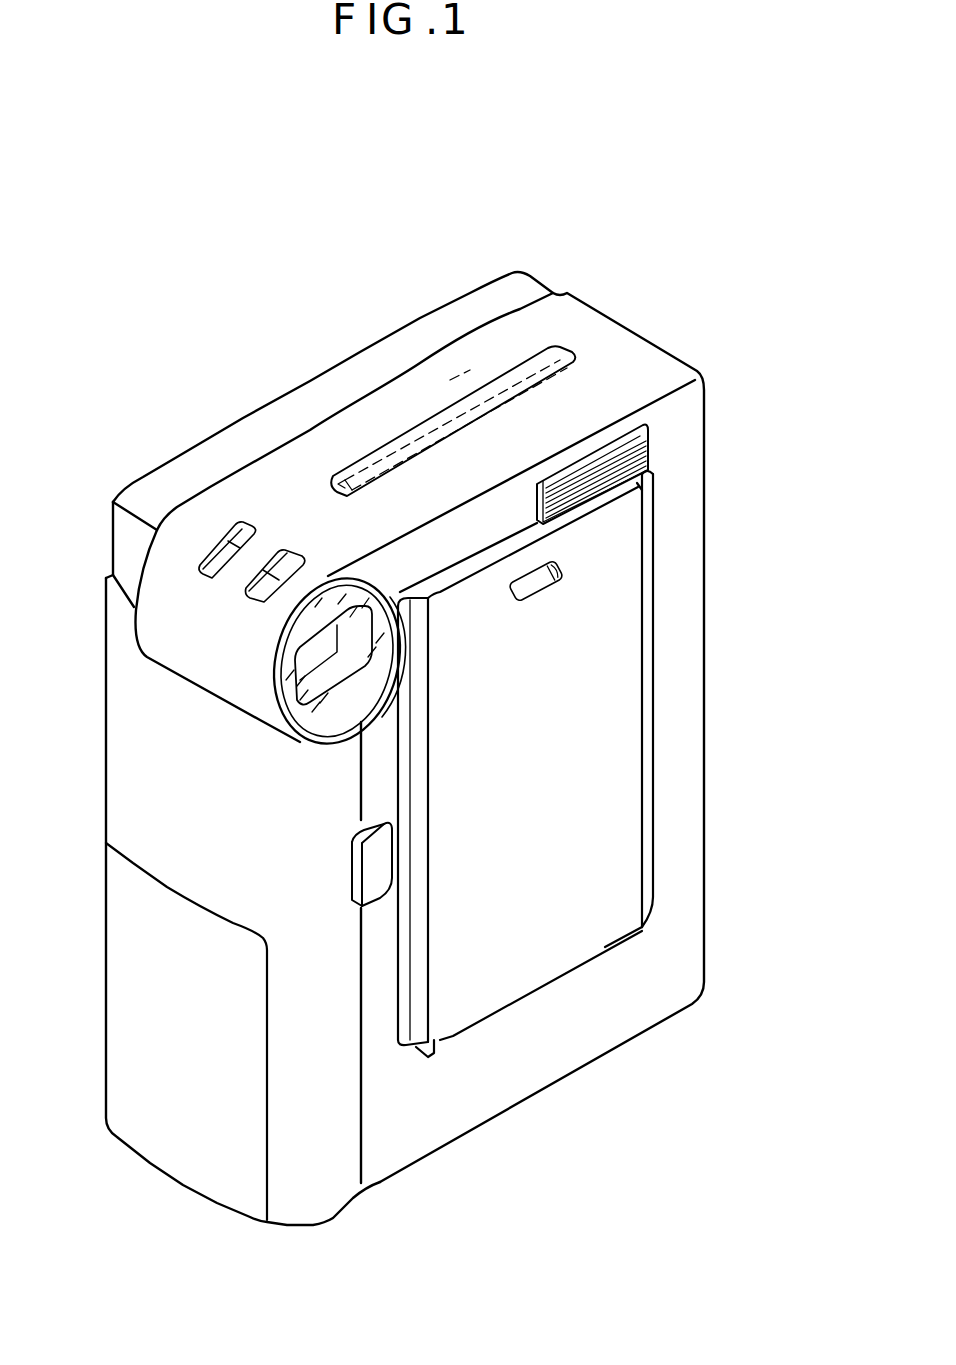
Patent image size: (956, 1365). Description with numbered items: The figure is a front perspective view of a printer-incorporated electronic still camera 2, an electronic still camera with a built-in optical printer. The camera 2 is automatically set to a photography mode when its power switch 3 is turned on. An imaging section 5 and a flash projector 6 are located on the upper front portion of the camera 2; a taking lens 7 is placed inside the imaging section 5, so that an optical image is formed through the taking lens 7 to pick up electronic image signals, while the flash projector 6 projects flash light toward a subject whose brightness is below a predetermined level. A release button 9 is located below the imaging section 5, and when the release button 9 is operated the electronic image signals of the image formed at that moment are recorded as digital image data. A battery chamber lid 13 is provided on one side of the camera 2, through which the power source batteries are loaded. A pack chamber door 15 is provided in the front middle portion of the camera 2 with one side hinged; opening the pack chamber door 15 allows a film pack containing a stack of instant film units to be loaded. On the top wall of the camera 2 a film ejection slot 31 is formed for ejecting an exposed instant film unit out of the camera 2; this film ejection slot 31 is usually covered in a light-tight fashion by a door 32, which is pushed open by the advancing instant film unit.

The printer-incorporated electronic still camera 2 is at (335, 340).
The power switch 3 is at (250, 528).
The imaging section 5 is at (337, 746).
The flash projector 6 is at (650, 448).
The taking lens 7 is at (306, 663).
The release button 9 is at (352, 888).
The battery chamber lid 13 is at (190, 1172).
The pack chamber door 15 is at (618, 745).
The film ejection slot 31 is at (468, 398).
The door 32 is at (576, 358).